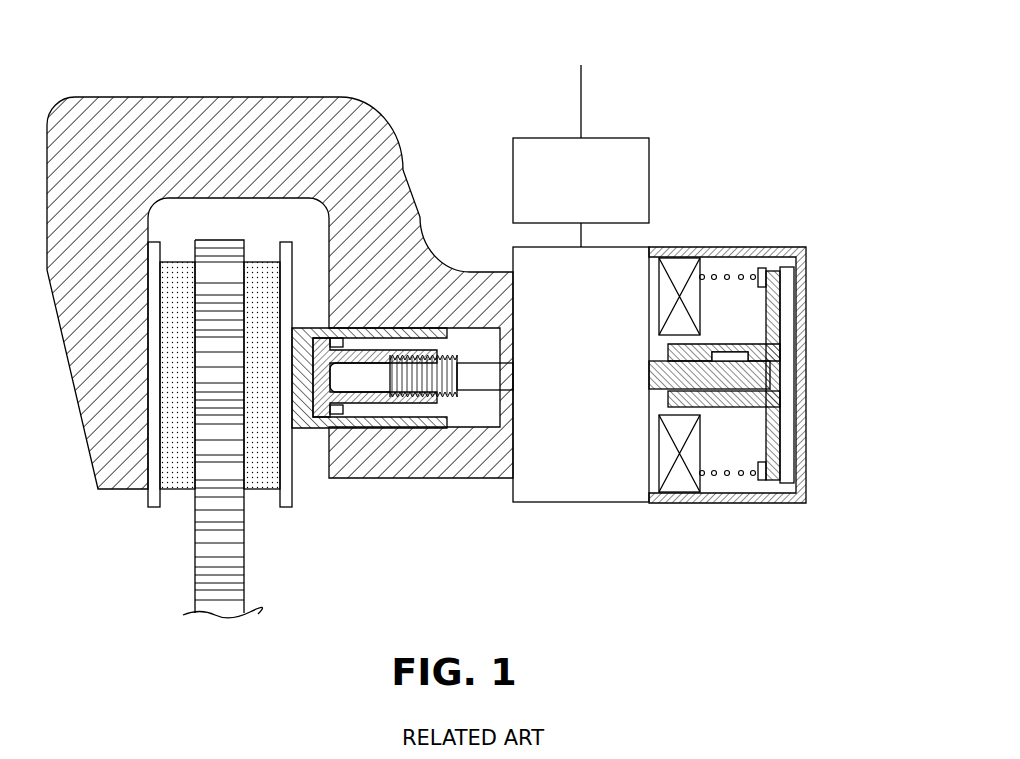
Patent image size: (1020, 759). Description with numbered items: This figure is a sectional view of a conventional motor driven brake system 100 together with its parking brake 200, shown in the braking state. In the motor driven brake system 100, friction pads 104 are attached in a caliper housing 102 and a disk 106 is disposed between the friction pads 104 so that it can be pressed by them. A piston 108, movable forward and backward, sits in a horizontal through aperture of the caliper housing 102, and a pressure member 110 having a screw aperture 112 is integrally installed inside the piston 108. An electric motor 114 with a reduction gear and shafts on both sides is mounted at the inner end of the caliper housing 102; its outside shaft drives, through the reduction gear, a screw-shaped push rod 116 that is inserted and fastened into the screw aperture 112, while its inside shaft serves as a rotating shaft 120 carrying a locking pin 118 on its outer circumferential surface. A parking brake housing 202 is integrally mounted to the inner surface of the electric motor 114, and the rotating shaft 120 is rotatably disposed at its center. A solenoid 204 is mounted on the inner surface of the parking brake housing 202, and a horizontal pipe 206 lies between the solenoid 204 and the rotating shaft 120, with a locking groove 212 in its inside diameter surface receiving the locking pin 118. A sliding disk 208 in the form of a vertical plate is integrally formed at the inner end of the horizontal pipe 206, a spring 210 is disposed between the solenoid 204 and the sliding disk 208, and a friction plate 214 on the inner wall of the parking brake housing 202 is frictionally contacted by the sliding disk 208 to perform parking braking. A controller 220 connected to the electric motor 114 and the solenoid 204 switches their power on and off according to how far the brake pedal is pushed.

The motor driven brake system 100 is at (348, 328).
The caliper housing 102 is at (265, 110).
The friction pads 104 is at (178, 482).
The disk 106 is at (230, 557).
The piston 108 is at (300, 430).
The pressure member 110 is at (330, 410).
The screw aperture 112 is at (443, 398).
The electric motor 114 is at (568, 493).
The push rod 116 is at (477, 380).
The locking pin 118 is at (725, 344).
The rotating shaft 120 is at (768, 377).
The parking brake 200 is at (777, 334).
The parking brake housing 202 is at (790, 247).
The solenoid 204 is at (675, 268).
The horizontal pipe 206 is at (732, 397).
The sliding disk 208 is at (777, 438).
The spring 210 is at (727, 277).
The locking groove 212 is at (750, 364).
The friction plate 214 is at (788, 325).
The controller 220 is at (613, 138).